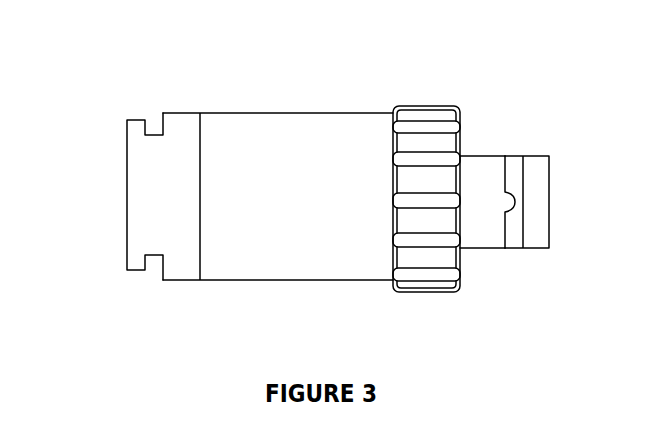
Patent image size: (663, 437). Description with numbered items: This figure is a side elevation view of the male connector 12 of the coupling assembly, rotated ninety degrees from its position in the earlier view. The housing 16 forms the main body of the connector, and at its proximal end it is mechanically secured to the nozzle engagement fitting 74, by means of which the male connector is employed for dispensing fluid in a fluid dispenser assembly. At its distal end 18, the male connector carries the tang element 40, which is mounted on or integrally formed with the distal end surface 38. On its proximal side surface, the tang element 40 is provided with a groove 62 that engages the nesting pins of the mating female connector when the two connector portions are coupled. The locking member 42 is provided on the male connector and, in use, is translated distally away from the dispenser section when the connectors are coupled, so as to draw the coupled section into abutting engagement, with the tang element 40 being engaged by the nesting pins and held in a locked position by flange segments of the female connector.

The male connector 12 is at (362, 102).
The housing 16 is at (292, 143).
The nozzle engagement fitting 74 is at (167, 203).
The locking member 42 is at (412, 283).
The distal end 18 is at (537, 143).
The distal end surface 38 is at (478, 220).
The tang element 40 is at (513, 218).
The groove 62 is at (505, 198).